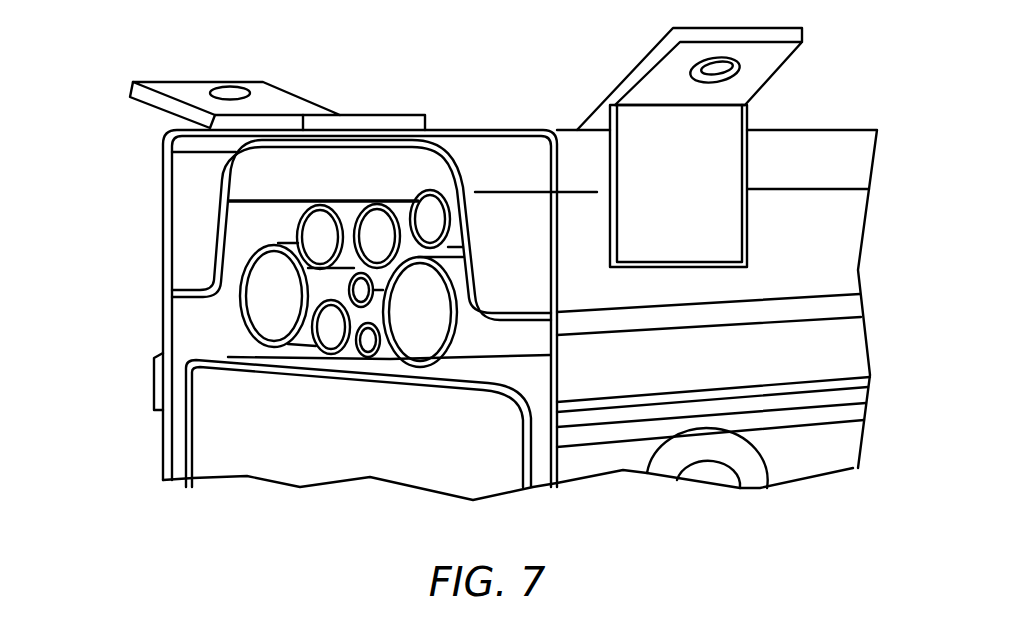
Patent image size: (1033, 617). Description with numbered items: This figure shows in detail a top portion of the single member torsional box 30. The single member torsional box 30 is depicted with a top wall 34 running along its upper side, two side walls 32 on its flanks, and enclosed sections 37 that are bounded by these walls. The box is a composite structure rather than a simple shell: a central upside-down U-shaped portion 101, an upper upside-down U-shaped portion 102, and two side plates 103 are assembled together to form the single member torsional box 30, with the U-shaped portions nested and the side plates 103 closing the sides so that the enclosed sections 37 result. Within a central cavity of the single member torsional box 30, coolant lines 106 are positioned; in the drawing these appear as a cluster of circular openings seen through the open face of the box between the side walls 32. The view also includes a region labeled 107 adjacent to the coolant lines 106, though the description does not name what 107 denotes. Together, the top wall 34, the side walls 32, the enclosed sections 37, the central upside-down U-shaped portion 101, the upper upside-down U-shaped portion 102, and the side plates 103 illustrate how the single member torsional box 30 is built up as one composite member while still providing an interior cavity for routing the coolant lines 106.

The single member torsional box 30 is at (460, 128).
The side walls 32 is at (160, 333).
The top wall 34 is at (393, 137).
The enclosed sections 37 is at (192, 208).
The central upside-down U-shaped portion 101 is at (177, 440).
The upper upside-down U-shaped portion 102 is at (790, 218).
The side plates 103 is at (157, 387).
The coolant lines 106 is at (378, 235).
The central compartment 107 is at (272, 217).